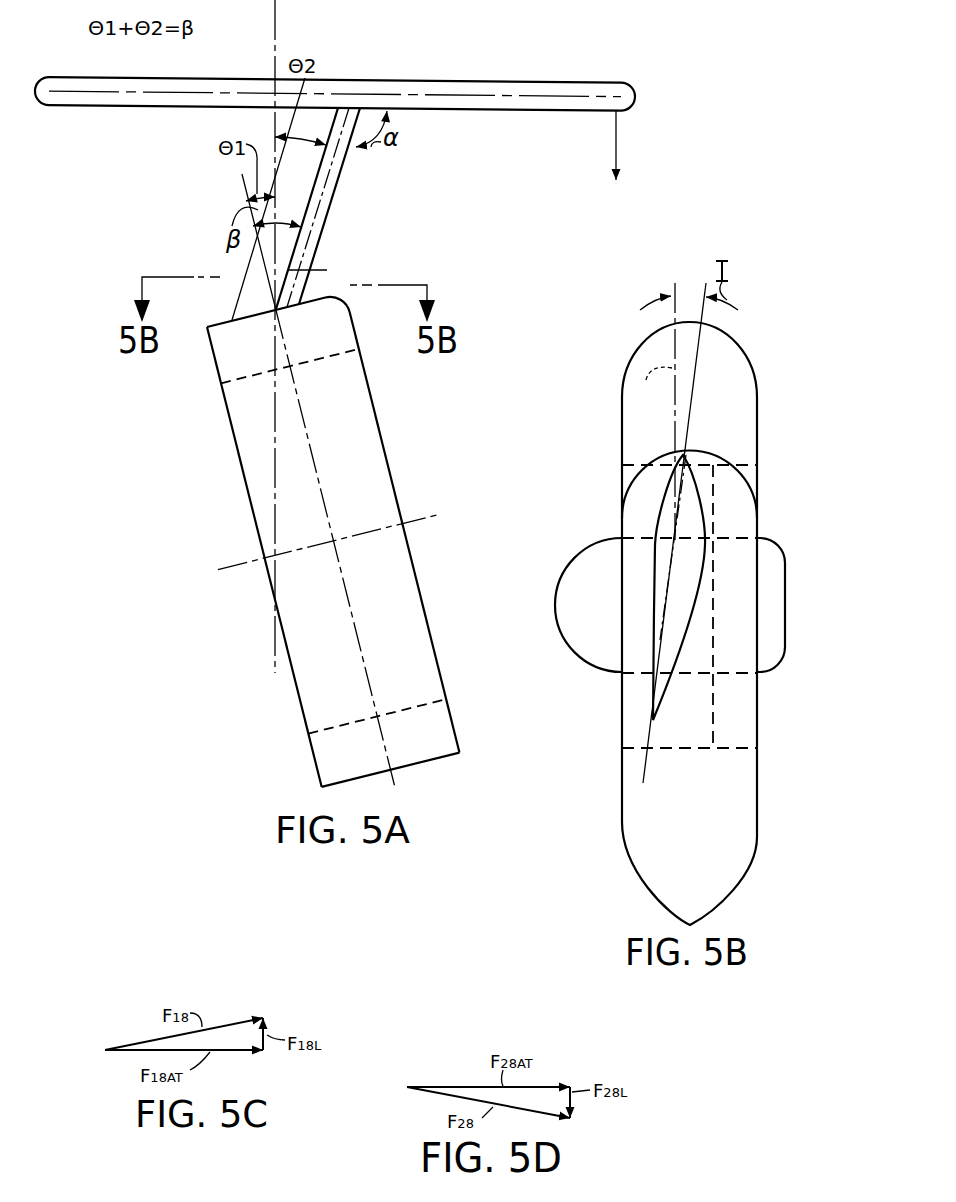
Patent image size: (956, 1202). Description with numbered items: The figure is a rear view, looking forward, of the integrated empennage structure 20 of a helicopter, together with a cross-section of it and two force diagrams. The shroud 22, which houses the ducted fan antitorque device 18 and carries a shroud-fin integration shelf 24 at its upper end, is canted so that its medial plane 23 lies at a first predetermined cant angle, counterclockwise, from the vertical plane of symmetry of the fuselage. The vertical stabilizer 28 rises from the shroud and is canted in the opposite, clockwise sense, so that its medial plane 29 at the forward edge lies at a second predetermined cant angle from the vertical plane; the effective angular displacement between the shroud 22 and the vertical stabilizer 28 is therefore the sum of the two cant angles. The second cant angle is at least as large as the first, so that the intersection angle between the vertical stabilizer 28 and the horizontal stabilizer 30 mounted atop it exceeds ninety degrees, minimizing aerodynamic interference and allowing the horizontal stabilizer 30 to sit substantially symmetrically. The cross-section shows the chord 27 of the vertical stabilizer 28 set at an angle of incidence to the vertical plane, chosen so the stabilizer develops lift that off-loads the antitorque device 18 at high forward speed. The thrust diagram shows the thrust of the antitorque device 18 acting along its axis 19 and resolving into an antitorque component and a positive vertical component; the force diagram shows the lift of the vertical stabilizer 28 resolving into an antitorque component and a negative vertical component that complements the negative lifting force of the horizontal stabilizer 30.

In FIG. 5A, the ducted fan antitorque device 18 is at (292, 684).
In FIG. 5B, the ducted fan antitorque device 18 is at (591, 673).
In FIG. 5A, the axis 19 is at (345, 527).
In FIG. 5A, the integrated empennage structure 20 is at (316, 481).
In FIG. 5B, the integrated empennage structure 20 is at (826, 607).
In FIG. 5A, the shroud 22 is at (450, 708).
In FIG. 5B, the shroud 22 is at (623, 808).
In FIG. 5A, the medial plane 23 is at (313, 457).
In FIG. 5A, the shroud-fin integration shelf 24 is at (216, 320).
In FIG. 5B, the chord 27 is at (672, 592).
In FIG. 5A, the vertical stabilizer 28 is at (344, 173).
In FIG. 5B, the vertical stabilizer 28 is at (707, 536).
In FIG. 5A, the medial plane 29 is at (328, 266).
In FIG. 5A, the horizontal stabilizer 30 is at (482, 80).